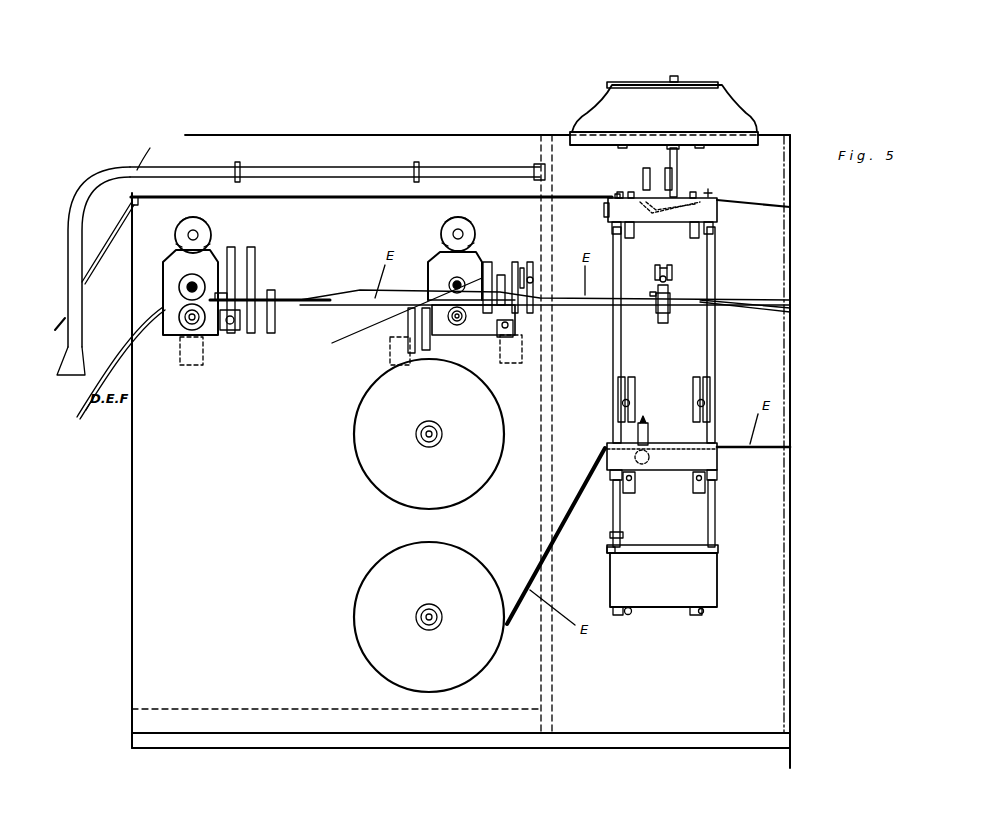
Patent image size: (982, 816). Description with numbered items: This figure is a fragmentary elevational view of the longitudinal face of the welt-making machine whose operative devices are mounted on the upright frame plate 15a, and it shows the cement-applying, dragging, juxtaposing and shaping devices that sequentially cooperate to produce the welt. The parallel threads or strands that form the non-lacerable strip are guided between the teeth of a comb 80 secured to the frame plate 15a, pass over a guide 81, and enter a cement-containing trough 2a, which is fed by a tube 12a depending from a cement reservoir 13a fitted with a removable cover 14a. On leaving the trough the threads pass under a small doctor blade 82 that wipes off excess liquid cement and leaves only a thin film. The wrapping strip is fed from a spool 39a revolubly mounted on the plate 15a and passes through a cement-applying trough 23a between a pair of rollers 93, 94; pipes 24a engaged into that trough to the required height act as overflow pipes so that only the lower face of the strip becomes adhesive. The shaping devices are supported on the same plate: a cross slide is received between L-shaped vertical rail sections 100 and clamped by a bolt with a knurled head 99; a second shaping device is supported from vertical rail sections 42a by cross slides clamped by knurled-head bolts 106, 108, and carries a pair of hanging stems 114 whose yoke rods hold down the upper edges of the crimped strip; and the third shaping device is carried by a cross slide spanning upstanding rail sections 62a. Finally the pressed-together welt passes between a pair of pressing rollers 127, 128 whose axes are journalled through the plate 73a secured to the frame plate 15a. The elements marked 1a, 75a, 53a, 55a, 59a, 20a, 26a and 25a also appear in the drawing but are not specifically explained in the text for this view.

The tubular frame member 1a is at (75, 247).
The upright frame plate 15a is at (290, 157).
The comb 80 is at (132, 192).
The plate 73a is at (155, 266).
The upper knurled roller 75a is at (192, 227).
The pressing roller 127 is at (180, 287).
The pressing roller 128 is at (192, 337).
The upstanding rail sections 62a is at (235, 250).
The second roller housing 53a is at (452, 217).
The knurled roller 55a is at (462, 227).
The vertical rail sections 42a is at (518, 263).
The bolt having a knurled head 106 is at (528, 263).
The hanging stems 114 is at (397, 312).
The upper reel 59a is at (397, 435).
The spool 39a is at (377, 610).
The cement reservoir 13a is at (673, 94).
The removable cover 14a is at (693, 84).
The tube 12a is at (677, 172).
The guide 81 is at (620, 195).
The small doctor blade 82 is at (722, 192).
The cement-containing trough 2a is at (625, 210).
The column posts 20a is at (718, 282).
The L-shaped vertical rail sections 100 is at (670, 268).
The bolt having a knurled head 108 is at (656, 268).
The bolt having a knurled head 99 is at (670, 280).
The guide plates 26a is at (697, 375).
The roller 93 is at (649, 442).
The cement-applying trough 23a is at (667, 463).
The roller 94 is at (643, 462).
The pipes 24a is at (620, 513).
The base box 25a is at (698, 583).